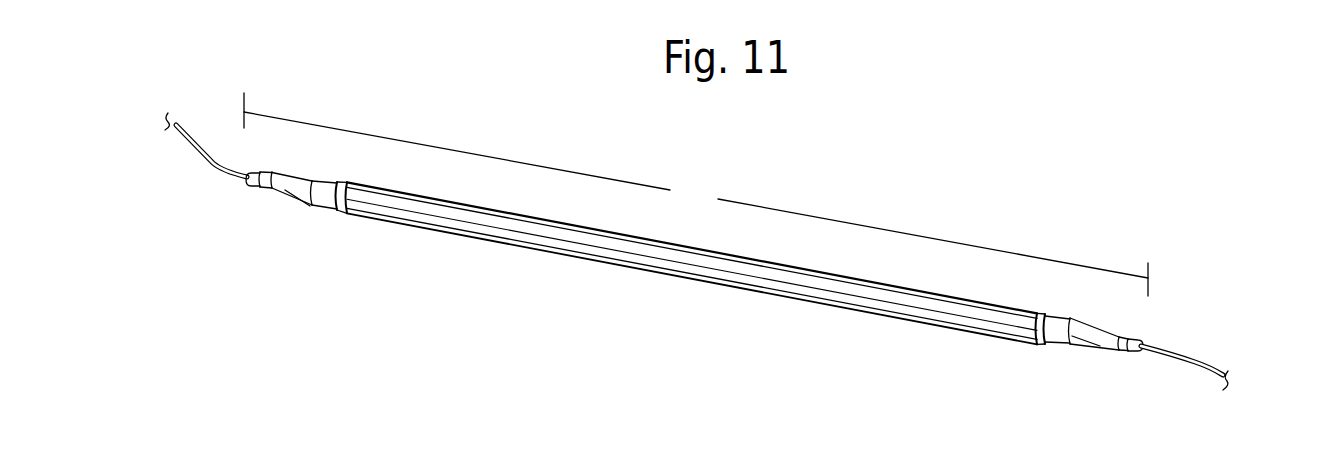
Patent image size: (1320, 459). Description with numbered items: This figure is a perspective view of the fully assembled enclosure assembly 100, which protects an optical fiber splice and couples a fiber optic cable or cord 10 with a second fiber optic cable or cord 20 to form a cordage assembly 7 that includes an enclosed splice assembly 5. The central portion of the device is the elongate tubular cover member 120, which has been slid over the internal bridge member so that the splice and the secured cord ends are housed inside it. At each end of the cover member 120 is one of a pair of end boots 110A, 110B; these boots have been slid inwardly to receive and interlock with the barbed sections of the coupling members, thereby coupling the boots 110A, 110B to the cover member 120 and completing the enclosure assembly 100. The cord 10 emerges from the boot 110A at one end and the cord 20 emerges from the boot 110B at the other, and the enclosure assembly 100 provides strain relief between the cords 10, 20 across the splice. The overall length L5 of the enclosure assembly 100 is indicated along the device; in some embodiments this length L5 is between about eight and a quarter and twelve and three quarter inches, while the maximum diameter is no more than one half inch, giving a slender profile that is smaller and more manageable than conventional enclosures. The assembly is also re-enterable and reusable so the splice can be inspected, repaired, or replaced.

The enclosed splice assembly 5 is at (264, 210).
The cordage assembly 7 is at (846, 324).
The fiber optic cable or cord 10 is at (1200, 362).
The fiber optic cable or cord 20 is at (221, 172).
The enclosure assembly 100 is at (603, 266).
The end boot 110A is at (1098, 335).
The end boot 110B is at (306, 203).
The elongate tubular cover member 120 is at (742, 273).
The length of the enclosure assembly L5 is at (696, 194).